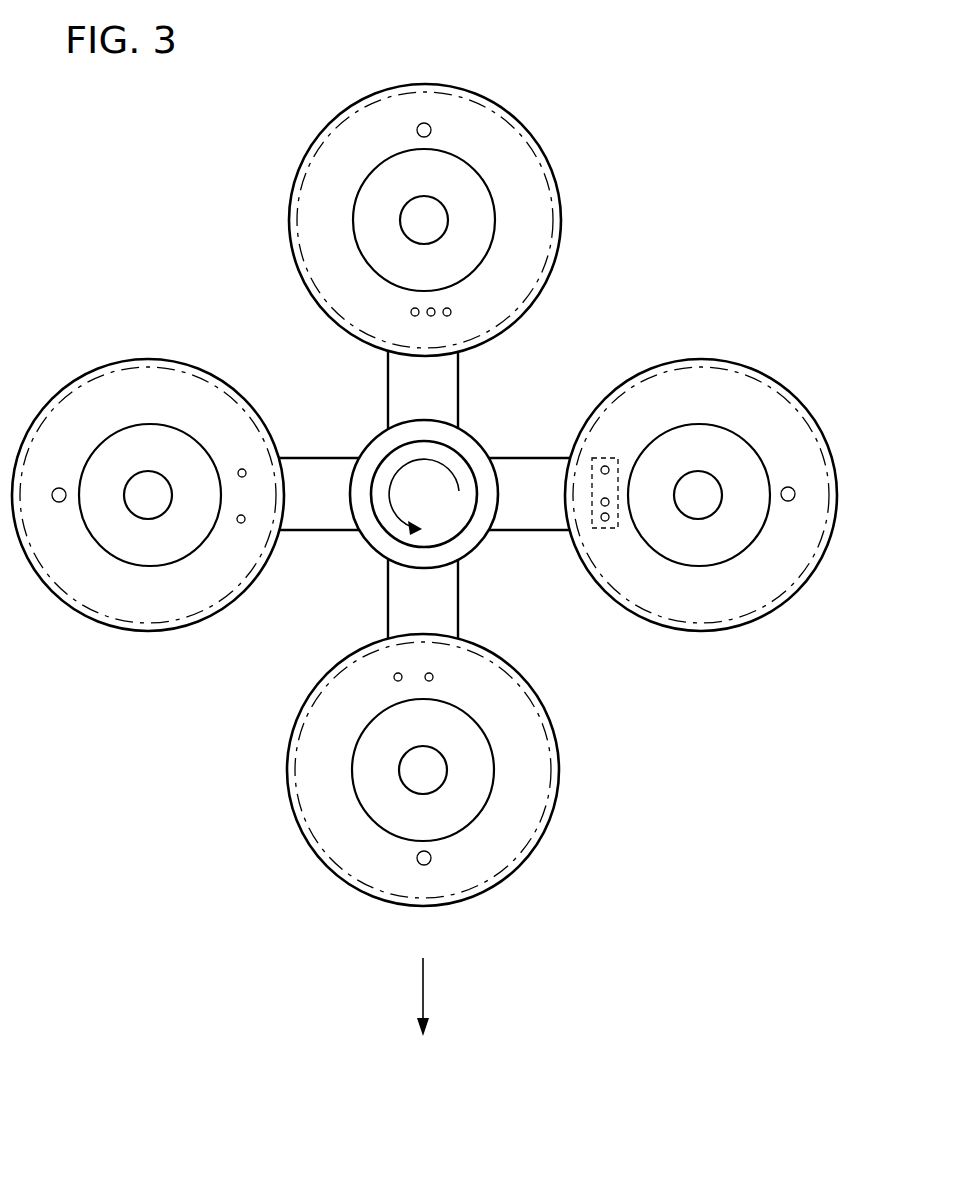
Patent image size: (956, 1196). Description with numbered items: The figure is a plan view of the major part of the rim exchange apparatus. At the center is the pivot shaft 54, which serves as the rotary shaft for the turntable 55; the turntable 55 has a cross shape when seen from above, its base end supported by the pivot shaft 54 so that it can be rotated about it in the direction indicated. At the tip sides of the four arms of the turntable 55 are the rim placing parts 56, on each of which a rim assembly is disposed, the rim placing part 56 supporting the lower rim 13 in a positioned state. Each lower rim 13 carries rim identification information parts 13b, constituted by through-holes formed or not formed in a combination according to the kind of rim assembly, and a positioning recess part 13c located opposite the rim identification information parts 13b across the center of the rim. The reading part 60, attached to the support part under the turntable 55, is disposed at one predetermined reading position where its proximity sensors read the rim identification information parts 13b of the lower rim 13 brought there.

The lower rim 13 is at (562, 202).
The rim identification information part 13b is at (452, 313).
The positioning recess part 13c is at (417, 130).
The pivot shaft 54 is at (468, 452).
The turntable 55 is at (308, 480).
The rim placing part 56 is at (290, 200).
The reading part 60 is at (605, 455).